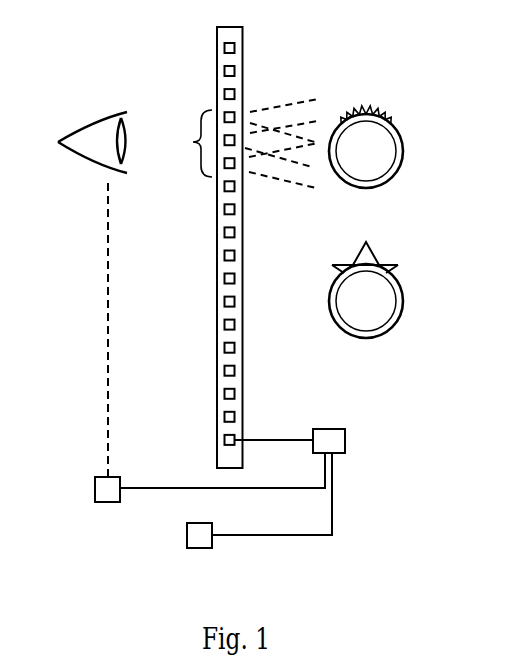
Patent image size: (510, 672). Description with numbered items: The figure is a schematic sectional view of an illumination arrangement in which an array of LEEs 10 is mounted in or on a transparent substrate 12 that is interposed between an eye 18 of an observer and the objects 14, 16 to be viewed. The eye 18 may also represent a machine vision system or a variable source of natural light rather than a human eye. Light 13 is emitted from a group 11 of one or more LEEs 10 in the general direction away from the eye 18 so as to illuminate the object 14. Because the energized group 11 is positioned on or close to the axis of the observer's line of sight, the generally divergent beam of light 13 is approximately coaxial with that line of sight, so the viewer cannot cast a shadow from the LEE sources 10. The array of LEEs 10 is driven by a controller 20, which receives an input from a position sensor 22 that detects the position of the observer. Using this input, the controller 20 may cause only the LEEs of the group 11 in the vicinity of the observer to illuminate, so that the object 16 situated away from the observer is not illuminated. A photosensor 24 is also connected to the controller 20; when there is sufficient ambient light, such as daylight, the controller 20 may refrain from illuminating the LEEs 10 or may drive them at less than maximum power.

The LEE 10 is at (234, 46).
The group of LEEs 11 is at (205, 113).
The transparent substrate 12 is at (217, 60).
The light 13 is at (305, 97).
The object 14 is at (403, 135).
The object 16 is at (402, 295).
The eye 18 is at (87, 133).
The controller 20 is at (347, 438).
The position sensor 22 is at (95, 485).
The photosensor 24 is at (185, 535).